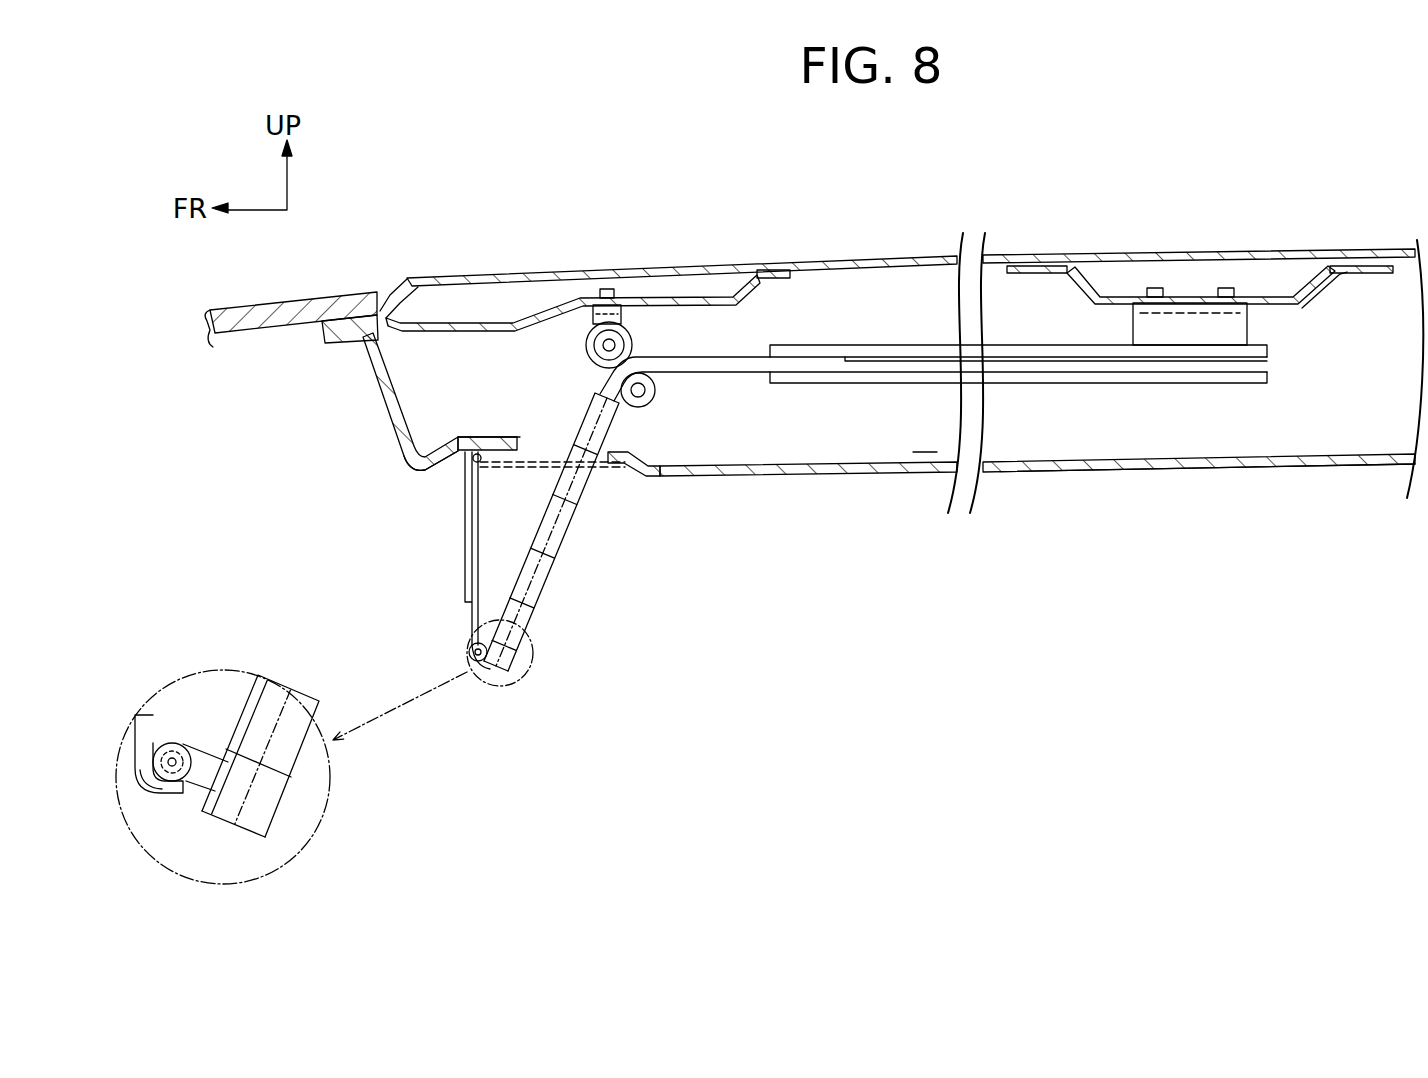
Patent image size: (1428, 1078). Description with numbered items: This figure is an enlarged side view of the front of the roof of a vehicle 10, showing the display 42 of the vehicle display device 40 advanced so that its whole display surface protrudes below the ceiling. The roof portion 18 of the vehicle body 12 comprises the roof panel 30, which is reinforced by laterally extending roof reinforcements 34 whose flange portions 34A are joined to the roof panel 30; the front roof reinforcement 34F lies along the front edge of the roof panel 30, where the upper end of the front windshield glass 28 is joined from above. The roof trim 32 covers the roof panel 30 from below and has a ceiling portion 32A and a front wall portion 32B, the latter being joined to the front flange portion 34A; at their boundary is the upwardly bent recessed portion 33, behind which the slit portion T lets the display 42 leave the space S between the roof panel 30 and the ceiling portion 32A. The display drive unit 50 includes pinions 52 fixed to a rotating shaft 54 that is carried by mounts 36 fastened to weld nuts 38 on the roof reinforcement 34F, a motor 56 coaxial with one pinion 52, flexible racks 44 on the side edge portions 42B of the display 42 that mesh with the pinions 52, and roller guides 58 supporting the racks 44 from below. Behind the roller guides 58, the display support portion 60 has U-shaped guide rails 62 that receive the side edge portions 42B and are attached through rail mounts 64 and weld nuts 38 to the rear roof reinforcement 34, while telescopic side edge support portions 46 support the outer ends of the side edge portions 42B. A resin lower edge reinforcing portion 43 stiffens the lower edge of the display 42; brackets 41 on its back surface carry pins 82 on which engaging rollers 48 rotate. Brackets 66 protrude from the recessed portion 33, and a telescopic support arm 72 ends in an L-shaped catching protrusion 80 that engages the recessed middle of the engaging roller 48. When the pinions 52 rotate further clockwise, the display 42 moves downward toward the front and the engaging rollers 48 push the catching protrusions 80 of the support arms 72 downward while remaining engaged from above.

The vehicle 10 is at (668, 228).
The vehicle body 12 is at (1200, 253).
The roof portion 18 is at (1203, 263).
The front windshield glass 28 is at (290, 294).
The roof panel 30 is at (1013, 257).
The roof trim 32 is at (1314, 484).
The ceiling portion 32A is at (1167, 474).
The front wall portion 32B is at (386, 406).
The recessed portion 33 is at (455, 481).
The roof reinforcement 34 is at (1298, 315).
The flange portion 34A is at (333, 326).
The front roof reinforcement 34F is at (460, 341).
The mount 36 is at (525, 350).
The weld nut 38 is at (603, 288).
The vehicle display device 40 is at (739, 519).
The bracket 41 is at (208, 778).
The display 42 is at (730, 389).
The side edge portion 42B is at (830, 362).
The lower edge reinforcing portion 43 is at (528, 668).
The rack 44 is at (760, 350).
The side edge support portion 46 is at (568, 517).
The engaging roller 48 is at (482, 648).
The display drive unit 50 is at (660, 331).
The pinion 52 is at (628, 340).
The rotating shaft 54 is at (627, 335).
The motor 56 is at (598, 330).
The roller guide 58 is at (660, 466).
The display support portion 60 is at (1273, 272).
The guide rail 62 is at (1212, 384).
The rail mount 64 is at (1147, 330).
The bracket 66 is at (477, 437).
The support arm 72 is at (467, 553).
The catching protrusion 80 is at (489, 672).
The pin 82 is at (171, 757).
The slit portion T is at (518, 437).
The space S is at (925, 437).